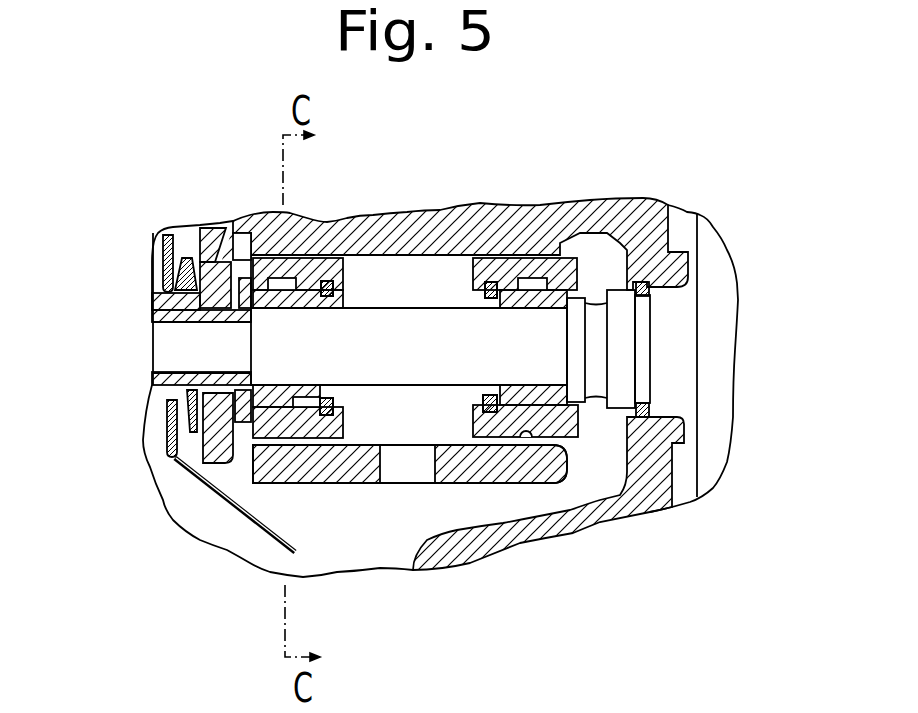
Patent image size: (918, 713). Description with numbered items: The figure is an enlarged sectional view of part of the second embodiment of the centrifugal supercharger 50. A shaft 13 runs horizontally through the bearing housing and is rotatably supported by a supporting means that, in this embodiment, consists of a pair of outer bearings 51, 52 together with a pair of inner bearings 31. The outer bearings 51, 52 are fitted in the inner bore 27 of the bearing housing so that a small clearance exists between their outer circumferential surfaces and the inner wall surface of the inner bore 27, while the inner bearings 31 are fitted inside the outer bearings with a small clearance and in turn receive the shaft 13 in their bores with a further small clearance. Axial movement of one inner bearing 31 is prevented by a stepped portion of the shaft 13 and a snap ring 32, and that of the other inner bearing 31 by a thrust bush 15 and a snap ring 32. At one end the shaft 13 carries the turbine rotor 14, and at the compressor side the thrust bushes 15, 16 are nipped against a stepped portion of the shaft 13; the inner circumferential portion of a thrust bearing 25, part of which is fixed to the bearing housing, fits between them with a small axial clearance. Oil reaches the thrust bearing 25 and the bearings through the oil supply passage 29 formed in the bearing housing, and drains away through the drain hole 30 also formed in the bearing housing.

The shaft 13 is at (406, 362).
The turbine rotor 14 is at (720, 357).
The thrust bush 15 is at (240, 423).
The thrust bush 16 is at (167, 378).
The thrust bearing 25 is at (200, 457).
The inner bore 27 is at (520, 423).
The oil supply passage 29 is at (300, 228).
The drain hole 30 is at (413, 470).
The inner bearing 31 is at (303, 400).
The snap ring 32 is at (490, 403).
The centrifugal supercharger 50 is at (663, 192).
The outer bearing 51 is at (330, 242).
The outer bearing 52 is at (556, 257).